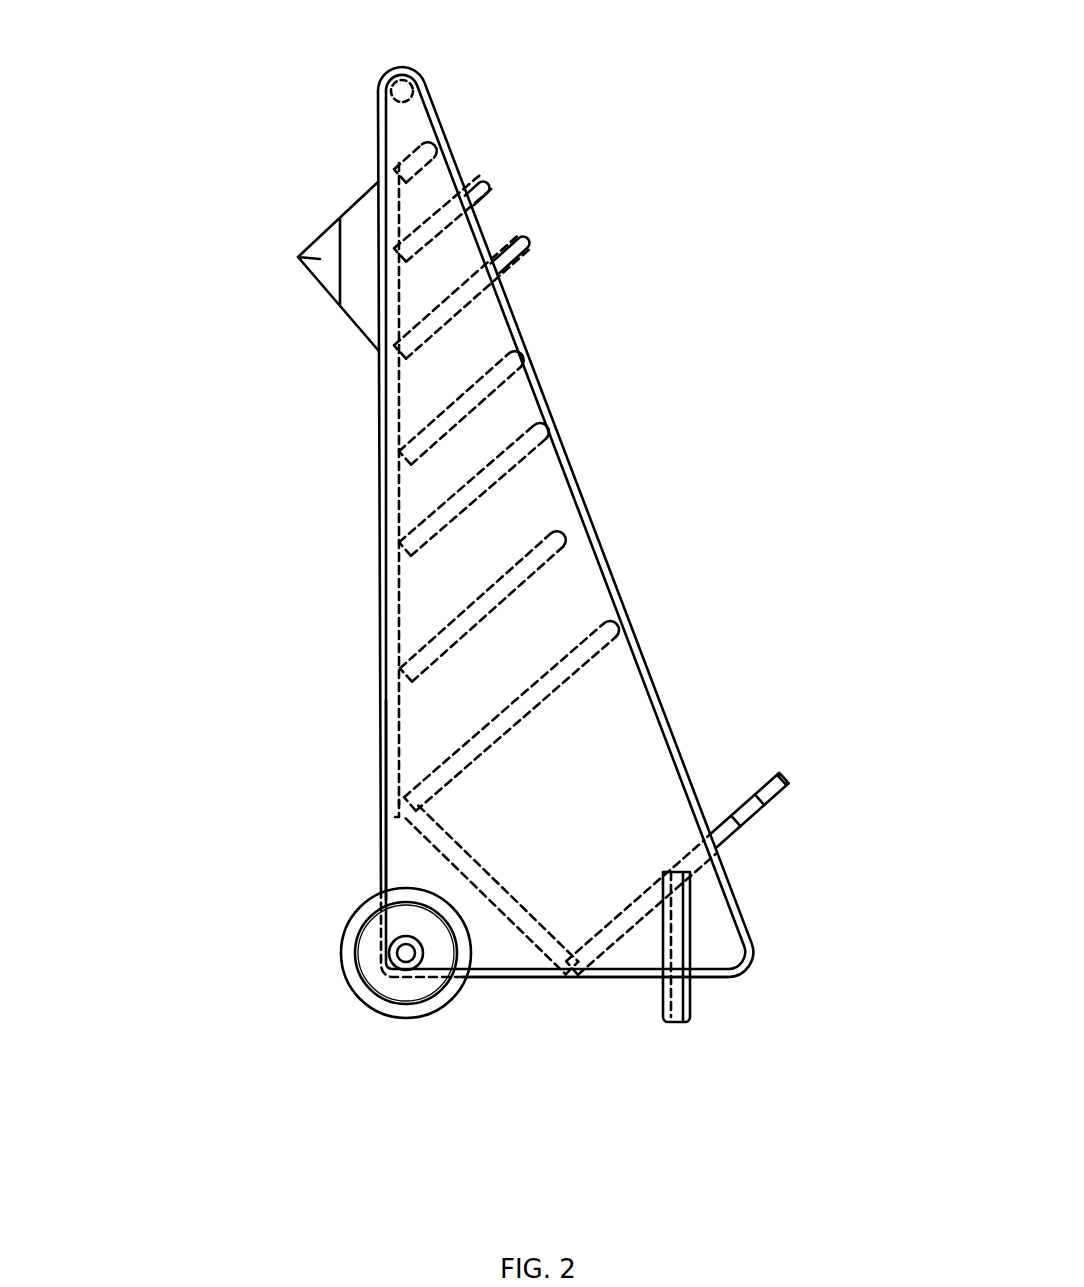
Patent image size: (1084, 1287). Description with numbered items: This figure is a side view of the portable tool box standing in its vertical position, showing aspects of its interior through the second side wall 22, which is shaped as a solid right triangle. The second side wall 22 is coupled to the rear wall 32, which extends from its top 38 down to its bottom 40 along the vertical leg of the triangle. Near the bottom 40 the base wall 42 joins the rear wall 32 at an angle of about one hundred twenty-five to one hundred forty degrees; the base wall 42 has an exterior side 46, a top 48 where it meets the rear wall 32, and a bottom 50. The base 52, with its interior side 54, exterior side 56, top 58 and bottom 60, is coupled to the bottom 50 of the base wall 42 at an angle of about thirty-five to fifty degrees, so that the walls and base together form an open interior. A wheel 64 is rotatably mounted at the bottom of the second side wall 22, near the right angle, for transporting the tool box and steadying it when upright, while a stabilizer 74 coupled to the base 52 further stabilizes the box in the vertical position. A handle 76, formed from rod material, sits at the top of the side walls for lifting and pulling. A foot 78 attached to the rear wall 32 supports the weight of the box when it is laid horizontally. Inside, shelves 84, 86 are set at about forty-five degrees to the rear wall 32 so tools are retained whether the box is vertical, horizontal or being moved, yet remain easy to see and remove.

The second side wall 22 is at (587, 568).
The rear wall 32 is at (393, 641).
The top of the rear wall 38 is at (380, 178).
The bottom of the rear wall 40 is at (392, 814).
The base wall 42 is at (497, 975).
The exterior side of the base wall 46 is at (435, 861).
The top of the base wall 48 is at (400, 798).
The bottom of the base wall 50 is at (560, 968).
The base 52 is at (745, 815).
The interior side of the base 54 is at (731, 788).
The exterior side of the base 56 is at (478, 983).
The top of the base 58 is at (782, 775).
The bottom of the base 60 is at (578, 965).
The wheel 64 is at (388, 1000).
The stabilizer 74 is at (678, 1004).
The handle 76 is at (403, 83).
The foot 78 is at (298, 258).
The shelf 84 is at (563, 535).
The shelf 86 is at (608, 640).